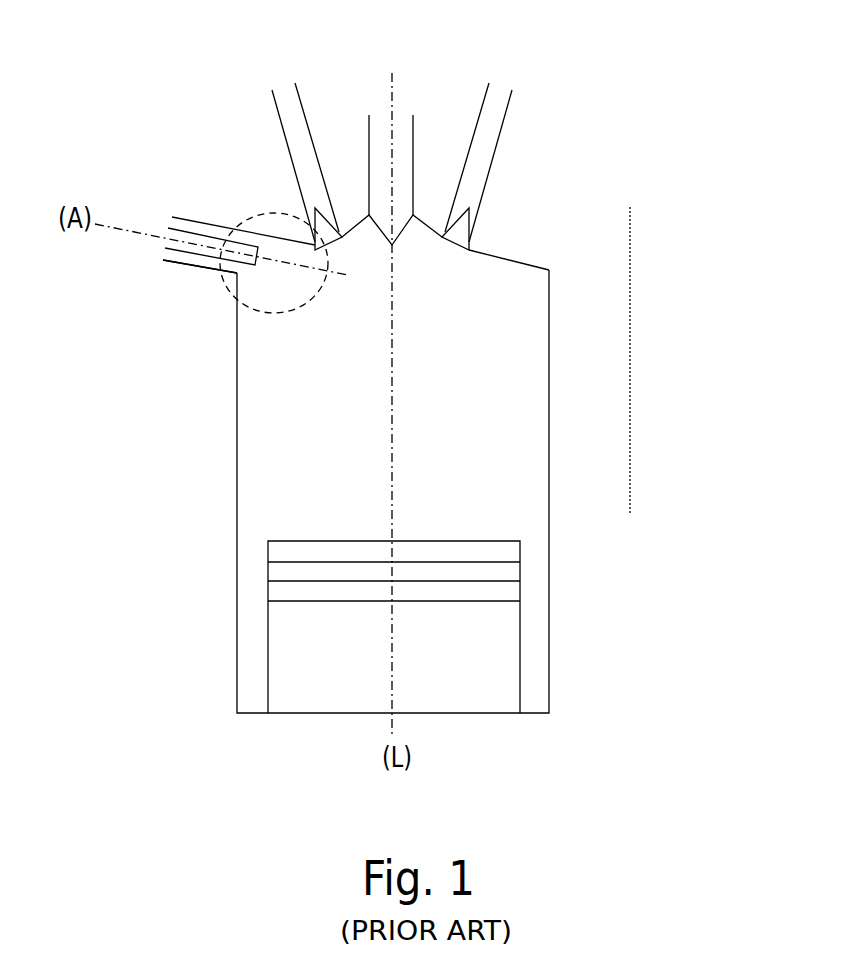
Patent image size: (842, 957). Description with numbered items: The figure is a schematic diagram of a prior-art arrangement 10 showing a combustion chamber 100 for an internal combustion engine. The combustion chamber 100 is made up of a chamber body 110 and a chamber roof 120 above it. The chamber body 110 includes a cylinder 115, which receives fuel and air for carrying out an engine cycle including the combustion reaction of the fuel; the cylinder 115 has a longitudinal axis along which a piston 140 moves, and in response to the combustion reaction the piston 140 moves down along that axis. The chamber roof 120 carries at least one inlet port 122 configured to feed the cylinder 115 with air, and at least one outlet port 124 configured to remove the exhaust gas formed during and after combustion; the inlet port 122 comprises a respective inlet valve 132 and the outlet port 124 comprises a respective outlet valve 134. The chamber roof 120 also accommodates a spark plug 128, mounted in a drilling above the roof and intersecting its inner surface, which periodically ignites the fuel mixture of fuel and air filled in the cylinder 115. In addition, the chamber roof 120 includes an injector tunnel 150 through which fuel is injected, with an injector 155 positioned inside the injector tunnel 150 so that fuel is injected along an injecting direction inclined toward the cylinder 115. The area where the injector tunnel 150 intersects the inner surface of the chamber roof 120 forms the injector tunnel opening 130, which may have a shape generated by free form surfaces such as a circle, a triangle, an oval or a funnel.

The prior art glass melting system 10 is at (93, 134).
The combustion chamber 100 is at (499, 460).
The chamber body 110 is at (625, 277).
The cylinder 115 is at (345, 422).
The chamber roof 120 is at (630, 207).
The inlet port 122 is at (338, 220).
The outlet port 124 is at (445, 220).
The spark plug 128 is at (382, 105).
The injector tunnel opening 130 is at (222, 290).
The inlet valve 132 is at (327, 257).
The outlet valve 134 is at (457, 249).
The piston 140 is at (477, 667).
The injector tunnel 150 is at (192, 268).
The injector 155 is at (193, 224).